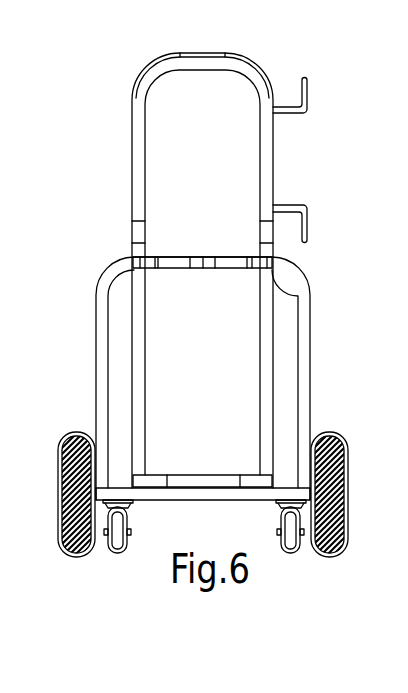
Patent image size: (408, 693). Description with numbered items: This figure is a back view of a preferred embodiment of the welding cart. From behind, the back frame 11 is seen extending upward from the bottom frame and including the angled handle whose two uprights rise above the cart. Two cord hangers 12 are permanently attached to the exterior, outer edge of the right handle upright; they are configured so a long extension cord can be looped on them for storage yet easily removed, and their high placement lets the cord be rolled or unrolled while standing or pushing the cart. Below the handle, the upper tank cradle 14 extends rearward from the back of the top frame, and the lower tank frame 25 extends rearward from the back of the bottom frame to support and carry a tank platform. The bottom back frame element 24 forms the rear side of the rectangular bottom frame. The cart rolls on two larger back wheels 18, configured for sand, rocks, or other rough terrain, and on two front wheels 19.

The back frame 11 is at (178, 53).
The cord hangers 12 is at (306, 203).
The upper tank cradle 14 is at (202, 271).
The back wheels 18 is at (78, 559).
The front wheels 19 is at (117, 558).
The bottom back frame element 24 is at (150, 495).
The lower tank frame 25 is at (206, 483).